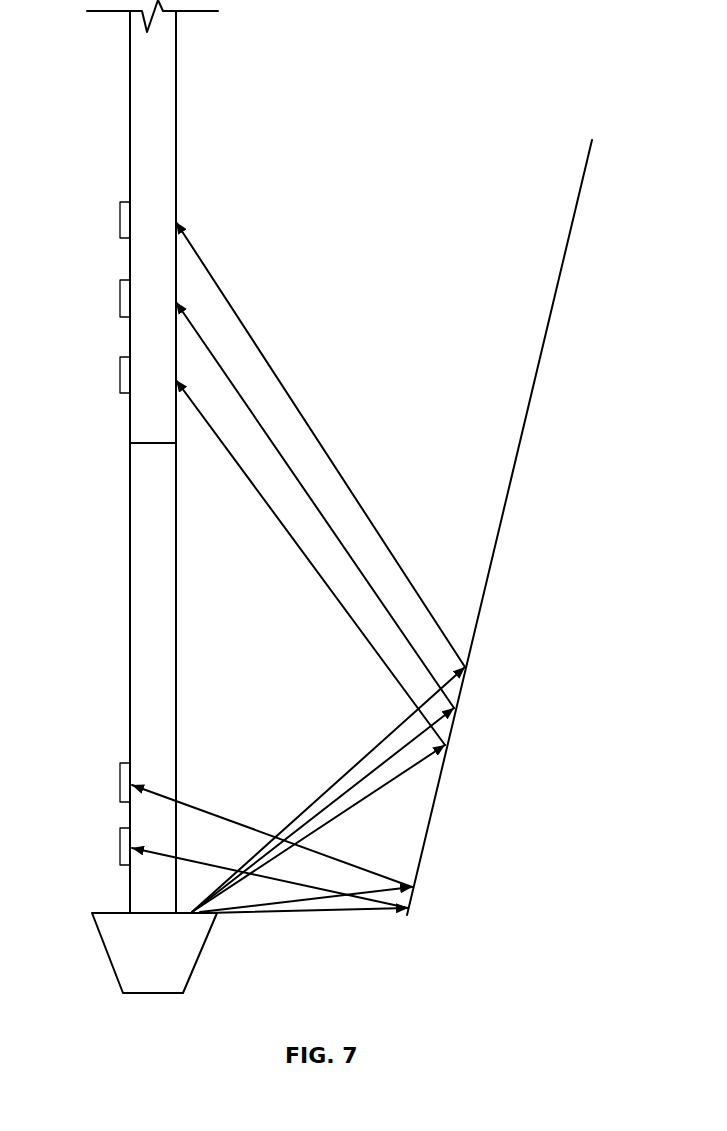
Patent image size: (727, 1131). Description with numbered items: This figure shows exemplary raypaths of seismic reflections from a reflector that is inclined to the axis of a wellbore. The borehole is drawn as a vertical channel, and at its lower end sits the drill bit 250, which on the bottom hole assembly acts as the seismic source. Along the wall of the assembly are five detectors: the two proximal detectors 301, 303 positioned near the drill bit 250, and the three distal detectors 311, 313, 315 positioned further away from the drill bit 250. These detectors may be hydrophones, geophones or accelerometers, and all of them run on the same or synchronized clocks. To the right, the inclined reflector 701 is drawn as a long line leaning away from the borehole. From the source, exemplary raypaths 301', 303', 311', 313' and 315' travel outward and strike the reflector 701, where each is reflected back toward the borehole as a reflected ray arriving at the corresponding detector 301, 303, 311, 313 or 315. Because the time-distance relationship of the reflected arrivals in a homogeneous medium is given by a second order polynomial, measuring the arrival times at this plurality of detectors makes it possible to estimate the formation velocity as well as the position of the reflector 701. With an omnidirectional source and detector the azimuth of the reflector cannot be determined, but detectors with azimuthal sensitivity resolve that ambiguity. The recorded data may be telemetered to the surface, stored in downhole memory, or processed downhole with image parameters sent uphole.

The distal detector 315 is at (83, 215).
The distal detector 313 is at (83, 294).
The distal detector 311 is at (83, 371).
The proximal detector 303 is at (83, 778).
The proximal detector 301 is at (83, 841).
The drill bit 250 is at (122, 951).
The reflector 701 is at (536, 378).
The raypath 315' is at (328, 789).
The raypath 313' is at (323, 810).
The raypath 311' is at (318, 828).
The raypath 303' is at (309, 871).
The raypath 301' is at (307, 926).